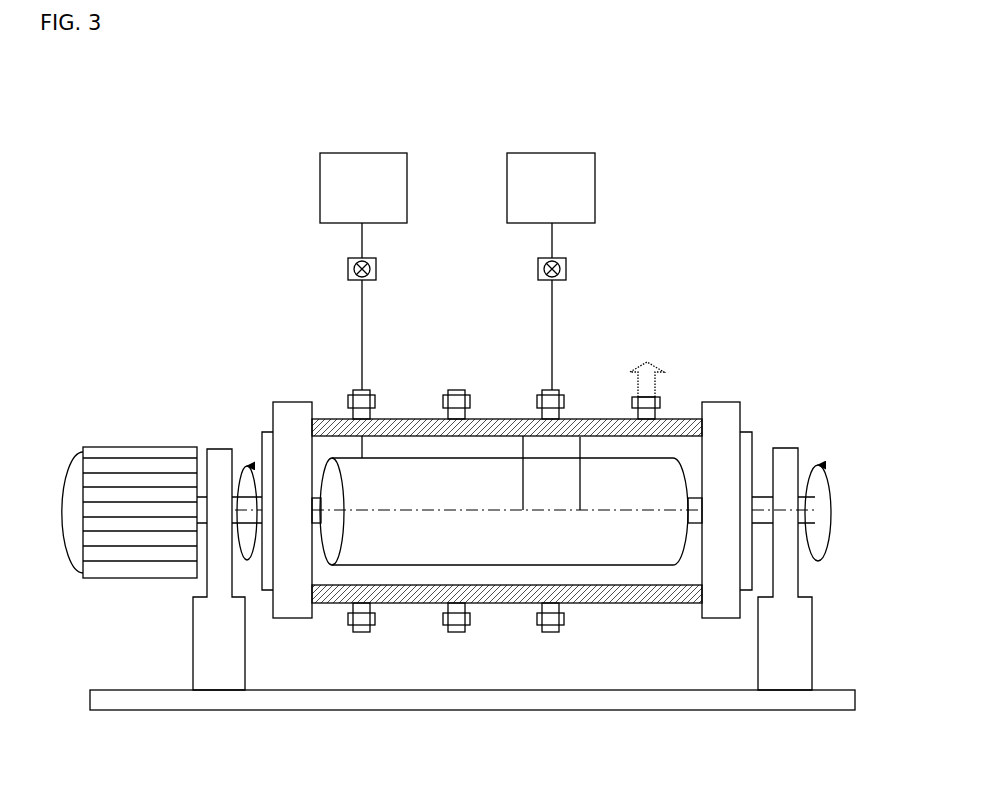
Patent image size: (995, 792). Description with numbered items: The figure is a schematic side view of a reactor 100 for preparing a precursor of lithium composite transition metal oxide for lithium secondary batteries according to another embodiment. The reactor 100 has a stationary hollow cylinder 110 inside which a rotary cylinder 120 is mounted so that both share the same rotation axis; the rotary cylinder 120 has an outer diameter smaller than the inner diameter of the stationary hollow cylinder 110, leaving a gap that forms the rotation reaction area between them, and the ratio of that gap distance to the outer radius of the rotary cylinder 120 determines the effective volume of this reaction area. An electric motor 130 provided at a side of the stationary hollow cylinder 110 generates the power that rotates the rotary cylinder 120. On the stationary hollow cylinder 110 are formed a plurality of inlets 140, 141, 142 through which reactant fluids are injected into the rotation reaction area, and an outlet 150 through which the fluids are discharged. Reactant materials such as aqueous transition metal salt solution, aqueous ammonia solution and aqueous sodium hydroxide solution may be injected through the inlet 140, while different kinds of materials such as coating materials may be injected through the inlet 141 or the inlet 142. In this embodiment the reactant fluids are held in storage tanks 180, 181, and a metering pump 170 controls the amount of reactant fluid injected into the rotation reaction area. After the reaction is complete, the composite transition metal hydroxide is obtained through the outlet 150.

The reactor 100 is at (458, 513).
The stationary hollow cylinder 110 is at (605, 607).
The rotary cylinder 120 is at (670, 568).
The electric motor 130 is at (127, 584).
The inlet 140 is at (371, 388).
The inlet 141 is at (461, 388).
The inlet 142 is at (566, 388).
The outlet 150 is at (660, 362).
The metering pump 170 is at (346, 269).
The storage tank 180 is at (551, 147).
The storage tank 181 is at (363, 147).